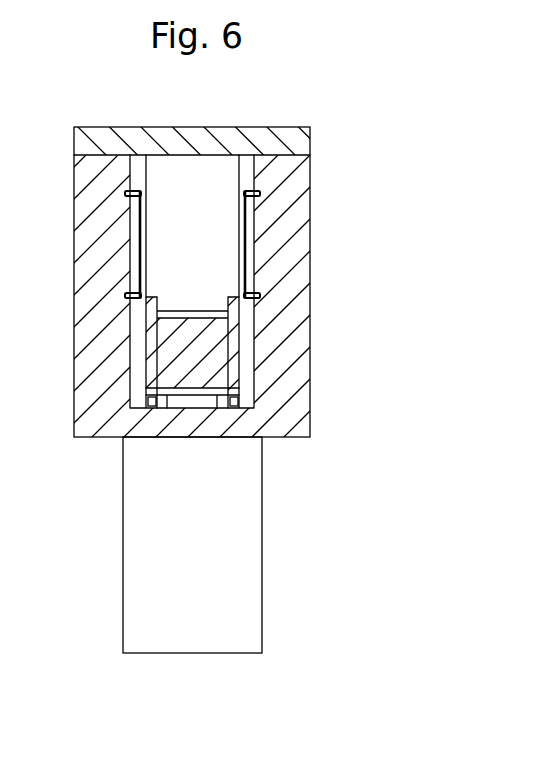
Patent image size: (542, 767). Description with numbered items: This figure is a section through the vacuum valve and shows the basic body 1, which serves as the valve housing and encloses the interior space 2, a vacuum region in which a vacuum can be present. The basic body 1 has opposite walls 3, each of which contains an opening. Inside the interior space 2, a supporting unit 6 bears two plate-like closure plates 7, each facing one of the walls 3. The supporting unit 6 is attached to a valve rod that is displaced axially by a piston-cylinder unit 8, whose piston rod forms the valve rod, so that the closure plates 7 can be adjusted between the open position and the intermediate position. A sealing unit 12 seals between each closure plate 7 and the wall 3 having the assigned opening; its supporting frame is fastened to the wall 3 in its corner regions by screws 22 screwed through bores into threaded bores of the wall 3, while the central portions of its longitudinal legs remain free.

The basic body 1 is at (331, 368).
The interior space 2 is at (191, 172).
The wall 3 is at (285, 206).
The supporting unit 6 is at (195, 375).
The closure plate 7 is at (153, 400).
The piston-cylinder unit 8 is at (281, 594).
The sealing unit 12 is at (152, 223).
The screw 22 is at (258, 194).